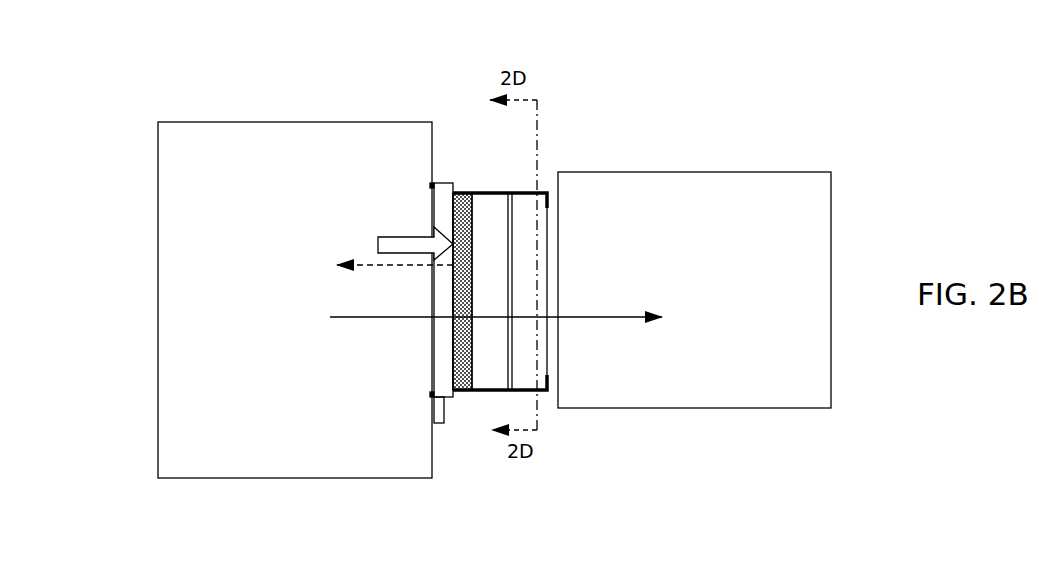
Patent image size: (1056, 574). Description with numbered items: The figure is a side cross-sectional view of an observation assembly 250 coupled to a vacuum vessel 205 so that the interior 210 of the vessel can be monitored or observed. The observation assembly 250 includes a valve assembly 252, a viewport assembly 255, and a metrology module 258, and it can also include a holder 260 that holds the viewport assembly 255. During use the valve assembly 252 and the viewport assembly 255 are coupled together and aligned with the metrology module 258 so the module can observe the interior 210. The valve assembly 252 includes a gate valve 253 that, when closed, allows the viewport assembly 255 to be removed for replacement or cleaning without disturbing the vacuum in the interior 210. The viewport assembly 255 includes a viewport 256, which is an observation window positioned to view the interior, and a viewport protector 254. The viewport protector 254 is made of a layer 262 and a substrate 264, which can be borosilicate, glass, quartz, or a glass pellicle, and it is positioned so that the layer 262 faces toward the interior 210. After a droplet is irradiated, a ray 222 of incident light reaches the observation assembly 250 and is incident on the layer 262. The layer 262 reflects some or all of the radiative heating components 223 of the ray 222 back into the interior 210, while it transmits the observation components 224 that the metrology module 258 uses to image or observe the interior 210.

The vacuum vessel 205 is at (140, 303).
The interior 210 is at (295, 300).
The ray 222 is at (407, 245).
The radiative heating components 223 is at (393, 268).
The observation components 224 is at (345, 318).
The observation assembly 250 is at (690, 95).
The valve assembly 252 is at (437, 373).
The gate valve 253 is at (442, 423).
The viewport protector 254 is at (493, 215).
The viewport assembly 255 is at (483, 405).
The viewport 256 is at (525, 222).
The metrology module 258 is at (698, 172).
The holder 260 is at (549, 393).
The layer 262 is at (463, 213).
The substrate 264 is at (493, 236).